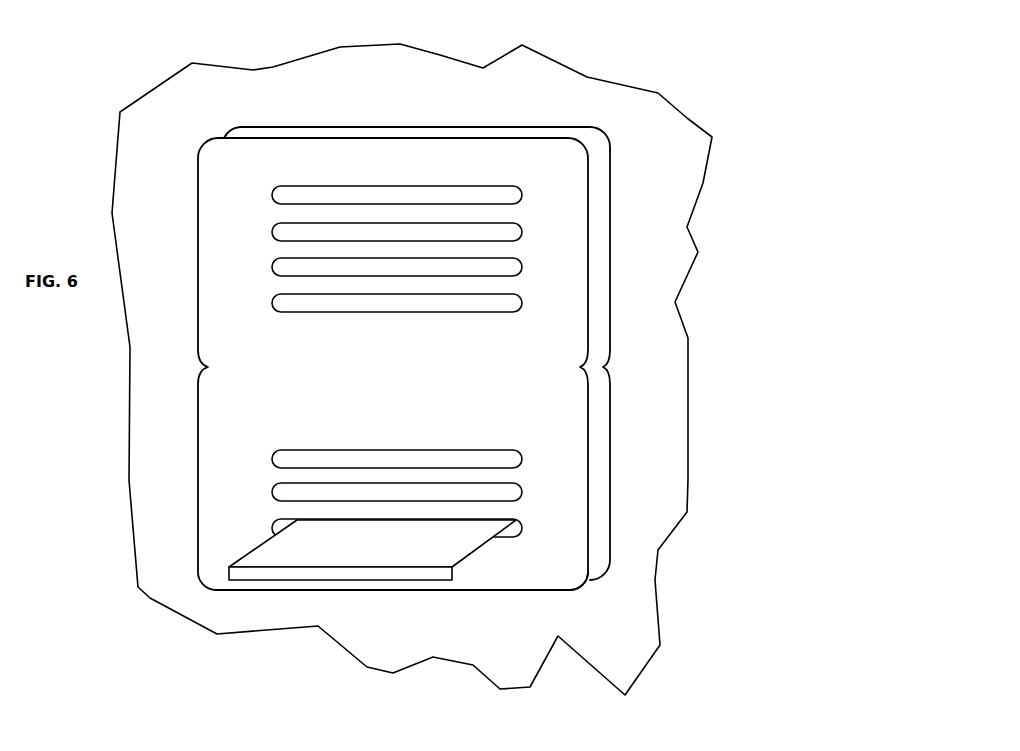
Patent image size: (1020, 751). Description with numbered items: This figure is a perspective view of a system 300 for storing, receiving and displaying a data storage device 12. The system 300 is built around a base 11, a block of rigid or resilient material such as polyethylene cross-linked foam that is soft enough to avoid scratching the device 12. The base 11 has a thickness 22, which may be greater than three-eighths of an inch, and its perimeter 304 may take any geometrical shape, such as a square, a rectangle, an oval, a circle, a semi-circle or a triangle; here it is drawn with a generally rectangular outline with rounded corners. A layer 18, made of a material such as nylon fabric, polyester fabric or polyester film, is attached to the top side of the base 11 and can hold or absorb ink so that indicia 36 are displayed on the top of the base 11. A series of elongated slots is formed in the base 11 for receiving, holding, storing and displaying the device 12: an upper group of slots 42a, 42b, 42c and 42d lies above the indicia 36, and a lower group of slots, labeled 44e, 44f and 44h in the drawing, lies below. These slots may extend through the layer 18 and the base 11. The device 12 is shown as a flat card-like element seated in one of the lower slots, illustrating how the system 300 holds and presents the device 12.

The system 300 is at (741, 332).
The base 11 is at (626, 427).
The thickness 22 is at (595, 145).
The perimeter 304 is at (612, 254).
The layer 18 is at (570, 577).
The slot 42a is at (259, 182).
The slot 42b is at (258, 223).
The slot 42c is at (258, 256).
The slot 42d is at (259, 317).
The indicia 36 is at (284, 375).
The slot end 44e is at (519, 439).
The slot 44f is at (258, 477).
The slot 44h is at (259, 515).
The data storage device 12 is at (250, 575).